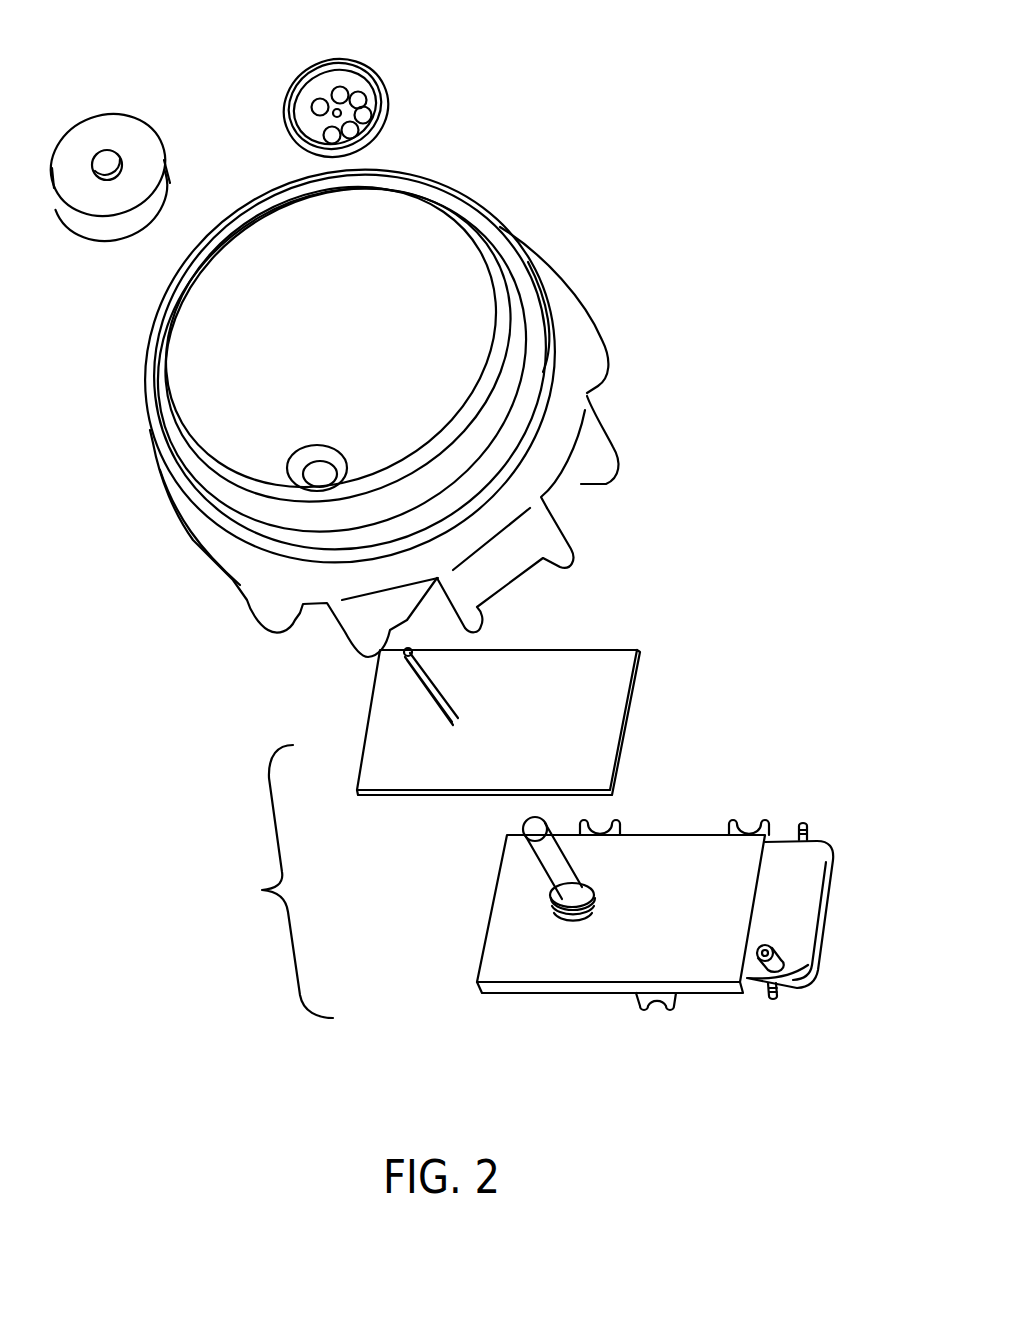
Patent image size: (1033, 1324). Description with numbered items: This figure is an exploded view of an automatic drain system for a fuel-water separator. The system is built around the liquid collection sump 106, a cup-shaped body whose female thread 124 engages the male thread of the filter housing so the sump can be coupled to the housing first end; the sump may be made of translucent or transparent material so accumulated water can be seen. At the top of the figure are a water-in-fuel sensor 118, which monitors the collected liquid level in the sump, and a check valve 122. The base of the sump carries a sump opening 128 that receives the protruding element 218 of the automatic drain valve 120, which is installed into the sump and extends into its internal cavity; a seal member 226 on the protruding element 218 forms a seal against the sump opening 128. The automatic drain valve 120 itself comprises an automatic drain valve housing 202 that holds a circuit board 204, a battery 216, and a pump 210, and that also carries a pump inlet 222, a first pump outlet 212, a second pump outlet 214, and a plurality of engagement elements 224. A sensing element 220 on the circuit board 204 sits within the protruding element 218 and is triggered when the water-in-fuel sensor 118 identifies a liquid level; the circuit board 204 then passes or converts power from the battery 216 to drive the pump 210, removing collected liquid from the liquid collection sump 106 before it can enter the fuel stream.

The liquid collection sump 106 is at (163, 503).
The water-in-fuel sensor 118 is at (95, 127).
The automatic drain valve 120 is at (275, 881).
The check valve 122 is at (358, 63).
The female thread 124 is at (233, 530).
The sump opening 128 is at (310, 463).
The automatic drain valve housing 202 is at (587, 988).
The circuit board 204 is at (632, 710).
The pump 210 is at (813, 880).
The first pump outlet 212 is at (807, 825).
The second pump outlet 214 is at (775, 997).
The battery 216 is at (513, 997).
The protruding element 218 is at (548, 865).
The sensing element 220 is at (437, 683).
The pump inlet 222 is at (780, 957).
The engagement elements 224 is at (607, 820).
The seal member 226 is at (560, 912).